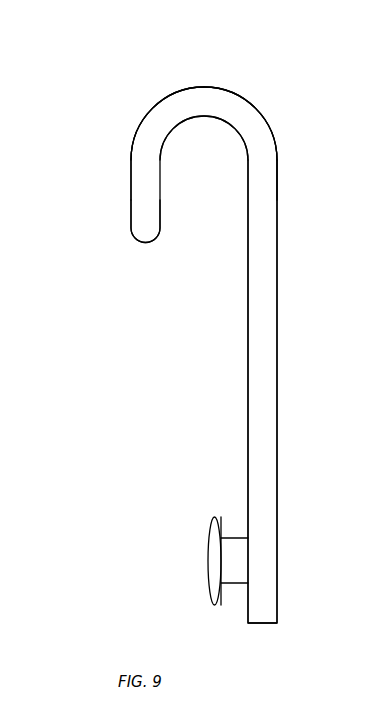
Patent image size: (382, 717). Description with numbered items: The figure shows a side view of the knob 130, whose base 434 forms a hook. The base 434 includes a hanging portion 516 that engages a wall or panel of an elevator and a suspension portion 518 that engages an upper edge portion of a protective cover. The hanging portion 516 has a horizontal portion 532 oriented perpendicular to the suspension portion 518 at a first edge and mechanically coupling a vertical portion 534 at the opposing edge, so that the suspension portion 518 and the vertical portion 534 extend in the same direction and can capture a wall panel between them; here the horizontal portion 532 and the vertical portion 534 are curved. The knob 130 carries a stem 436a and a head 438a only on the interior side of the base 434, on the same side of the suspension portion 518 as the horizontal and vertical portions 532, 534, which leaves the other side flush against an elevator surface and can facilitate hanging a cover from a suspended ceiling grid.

The knob 130 is at (128, 66).
The hanging portion 516 is at (102, 144).
The horizontal portion 532 is at (210, 100).
The base 434 is at (268, 120).
The suspension portion 518 is at (270, 217).
The vertical portion 534 is at (147, 220).
The stem 436a is at (237, 553).
The head 438a is at (215, 555).